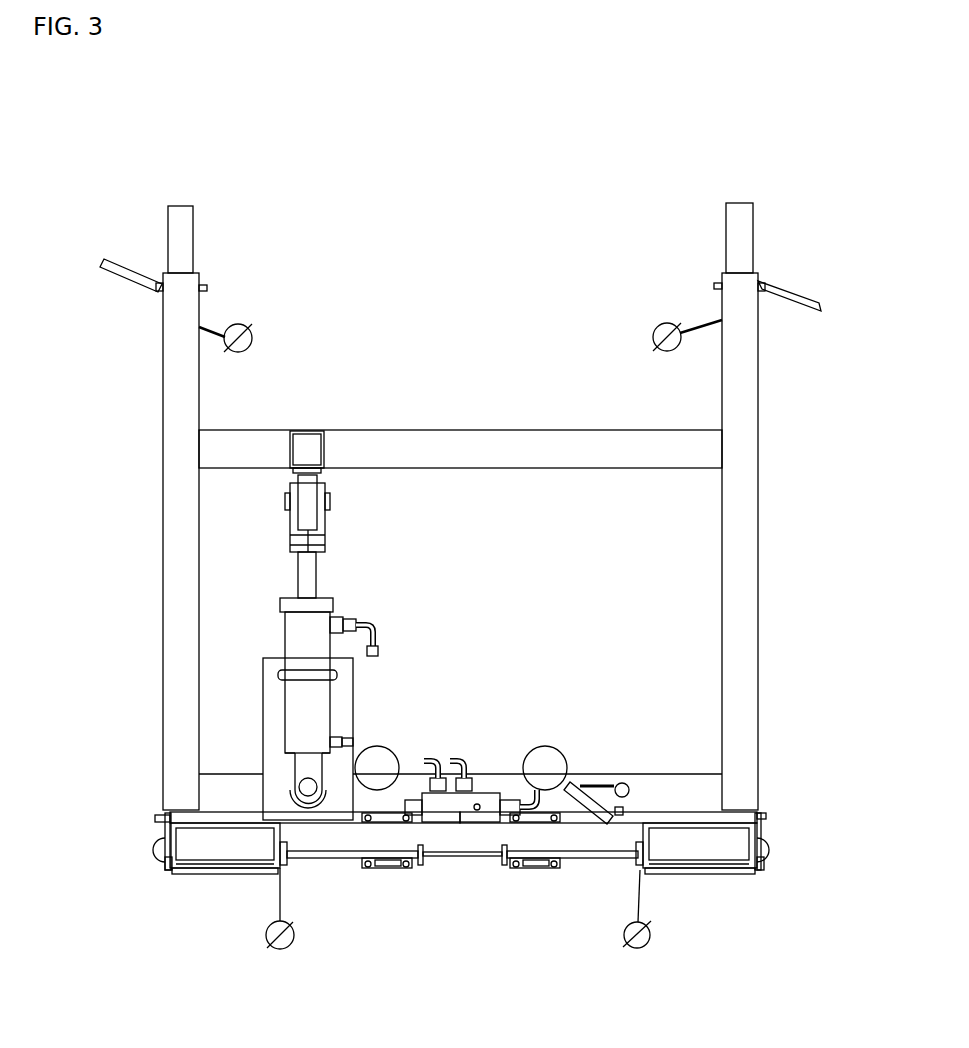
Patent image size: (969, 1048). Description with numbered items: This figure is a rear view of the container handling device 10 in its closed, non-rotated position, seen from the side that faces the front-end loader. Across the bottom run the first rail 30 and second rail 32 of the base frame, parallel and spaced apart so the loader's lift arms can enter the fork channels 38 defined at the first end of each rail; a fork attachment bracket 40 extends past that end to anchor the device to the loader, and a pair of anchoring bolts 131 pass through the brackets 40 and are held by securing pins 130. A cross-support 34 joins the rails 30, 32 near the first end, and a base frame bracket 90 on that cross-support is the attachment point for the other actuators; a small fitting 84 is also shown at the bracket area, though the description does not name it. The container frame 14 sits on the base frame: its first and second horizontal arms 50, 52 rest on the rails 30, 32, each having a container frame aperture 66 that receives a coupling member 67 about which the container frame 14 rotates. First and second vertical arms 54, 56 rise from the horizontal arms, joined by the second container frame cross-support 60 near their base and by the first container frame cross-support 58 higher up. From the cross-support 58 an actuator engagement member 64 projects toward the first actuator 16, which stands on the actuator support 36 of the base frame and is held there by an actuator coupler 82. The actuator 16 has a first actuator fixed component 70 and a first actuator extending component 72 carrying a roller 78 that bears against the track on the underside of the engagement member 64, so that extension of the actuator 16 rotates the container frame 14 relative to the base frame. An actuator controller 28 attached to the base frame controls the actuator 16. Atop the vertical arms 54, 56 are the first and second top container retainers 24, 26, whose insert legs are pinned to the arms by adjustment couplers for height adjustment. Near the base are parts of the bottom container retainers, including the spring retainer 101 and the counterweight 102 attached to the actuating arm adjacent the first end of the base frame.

The container handling device 10 is at (529, 160).
The container frame 14 is at (460, 408).
The first actuator 16 is at (314, 689).
The first top container retainer 24 is at (212, 477).
The second top container retainer 26 is at (715, 475).
The actuator controller 28 is at (488, 810).
The first rail 30 is at (282, 834).
The second rail 32 is at (648, 832).
The cross-support 34 is at (453, 847).
The actuator support 36 is at (345, 695).
The fork channels 38 is at (223, 847).
The fork attachment bracket 40 is at (165, 866).
The first horizontal arm 50 is at (165, 828).
The second horizontal arm 52 is at (760, 827).
The first vertical arm 54 is at (163, 371).
The second vertical arm 56 is at (758, 391).
The first container frame cross-support 58 is at (460, 436).
The second container frame cross-support 60 is at (628, 782).
The actuator engagement member 64 is at (303, 442).
The container frame aperture 66 is at (321, 471).
The coupling member 67 is at (155, 850).
The first actuator fixed component 70 is at (293, 640).
The first actuator extending component 72 is at (312, 566).
The roller 78 is at (310, 498).
The actuator coupler 82 is at (300, 785).
The slide block 84 is at (392, 869).
The base frame bracket 90 is at (373, 867).
The spring retainer 101 is at (600, 784).
The counterweight 102 is at (378, 748).
The securing pins 130 is at (283, 949).
The anchoring bolts 131 is at (350, 860).